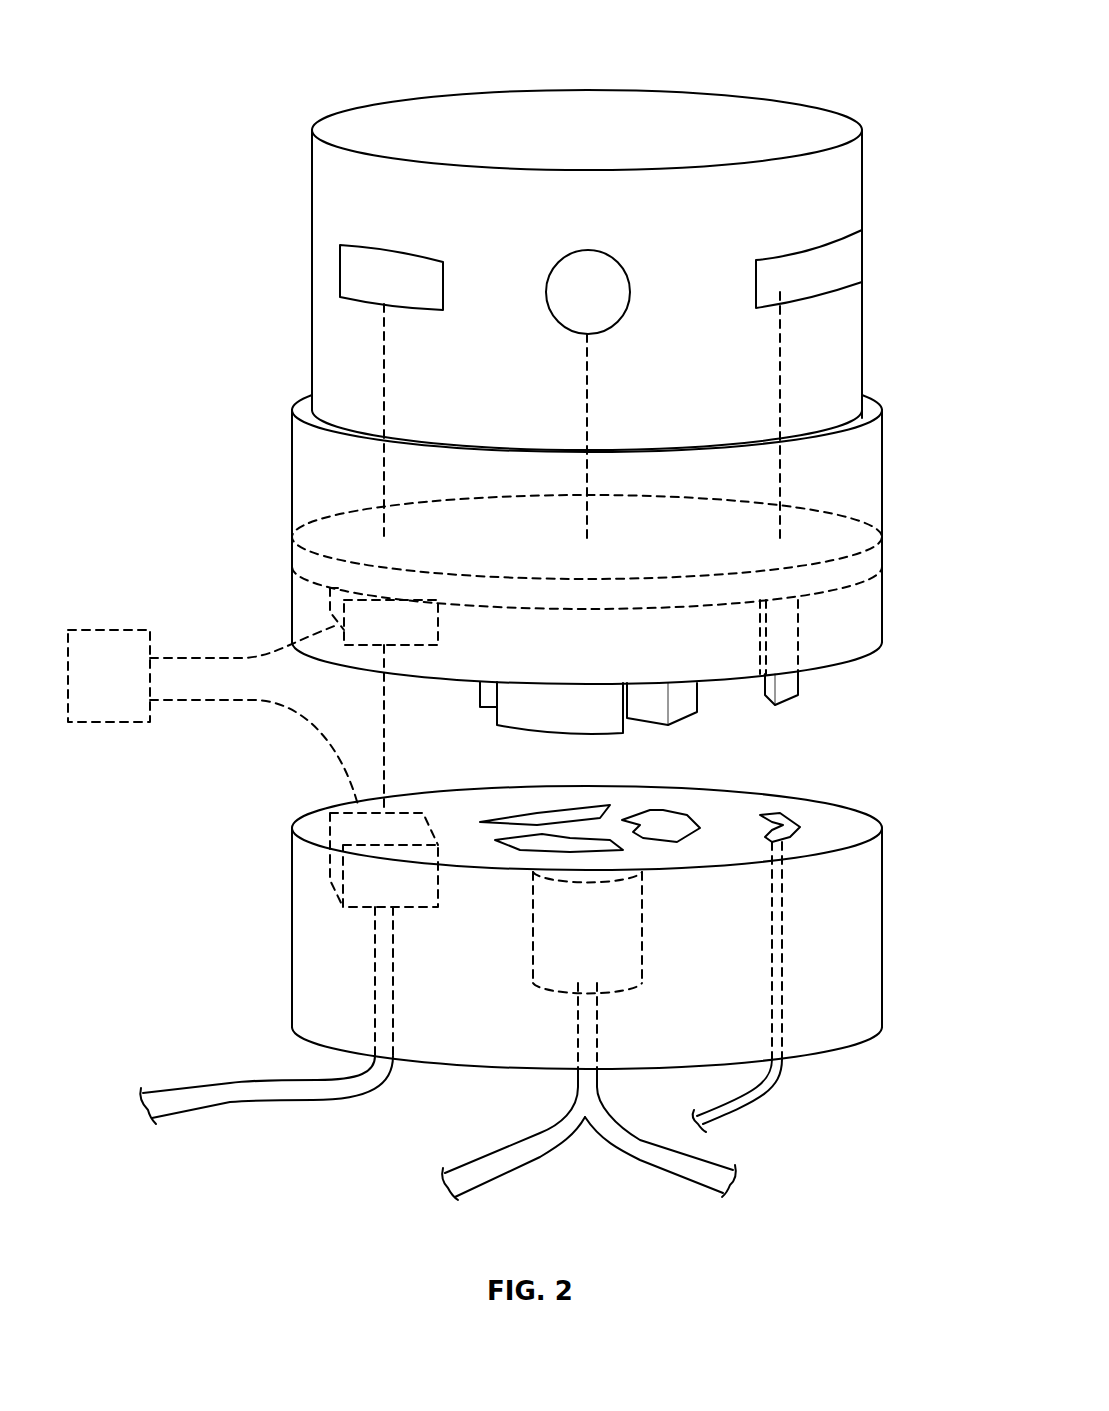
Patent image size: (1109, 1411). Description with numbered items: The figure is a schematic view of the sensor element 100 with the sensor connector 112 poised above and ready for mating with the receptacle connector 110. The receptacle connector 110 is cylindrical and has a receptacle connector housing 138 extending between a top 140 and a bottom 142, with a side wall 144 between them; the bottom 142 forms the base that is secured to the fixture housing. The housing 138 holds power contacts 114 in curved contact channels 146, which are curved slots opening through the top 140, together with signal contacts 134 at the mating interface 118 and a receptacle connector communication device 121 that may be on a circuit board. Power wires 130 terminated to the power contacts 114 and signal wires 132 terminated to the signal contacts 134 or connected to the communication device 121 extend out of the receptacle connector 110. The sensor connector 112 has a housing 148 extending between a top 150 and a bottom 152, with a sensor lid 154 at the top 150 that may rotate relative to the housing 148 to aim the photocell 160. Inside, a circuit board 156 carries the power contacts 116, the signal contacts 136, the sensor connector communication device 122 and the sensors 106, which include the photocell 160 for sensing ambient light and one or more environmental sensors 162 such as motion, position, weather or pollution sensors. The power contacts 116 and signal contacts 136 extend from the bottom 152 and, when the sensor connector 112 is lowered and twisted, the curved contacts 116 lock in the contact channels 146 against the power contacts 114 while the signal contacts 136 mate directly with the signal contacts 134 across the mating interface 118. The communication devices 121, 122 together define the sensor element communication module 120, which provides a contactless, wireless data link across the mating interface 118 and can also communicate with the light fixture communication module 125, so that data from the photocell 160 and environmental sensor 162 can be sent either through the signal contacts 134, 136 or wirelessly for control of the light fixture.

The sensor element 100 is at (185, 248).
The sensors 106 is at (340, 270).
The receptacle connector 110 is at (925, 885).
The sensor connector 112 is at (905, 570).
The power contacts 114 is at (533, 947).
The power contacts 116 is at (600, 733).
The mating interface 118 is at (318, 752).
The sensor element communication module 120 is at (343, 910).
The receptacle connector communication device 121 is at (330, 867).
The sensor connector communication device 122 is at (323, 608).
The light fixture communication module 125 is at (100, 630).
The power wires 130 is at (487, 1173).
The signal wires 132 is at (227, 1097).
The signal contacts 134 is at (785, 828).
The signal contacts 136 is at (785, 705).
The receptacle connector housing 138 is at (843, 952).
The top 140 is at (860, 832).
The bottom 142 is at (857, 1042).
The side wall 144 is at (885, 985).
The contact channels 146 is at (517, 818).
The housing 148 is at (838, 470).
The top 150 is at (862, 410).
The bottom 152 is at (868, 655).
The sensor lid 154 is at (845, 317).
The circuit board 156 is at (837, 540).
The photocell 160 is at (574, 252).
The environmental sensor 162 is at (396, 252).